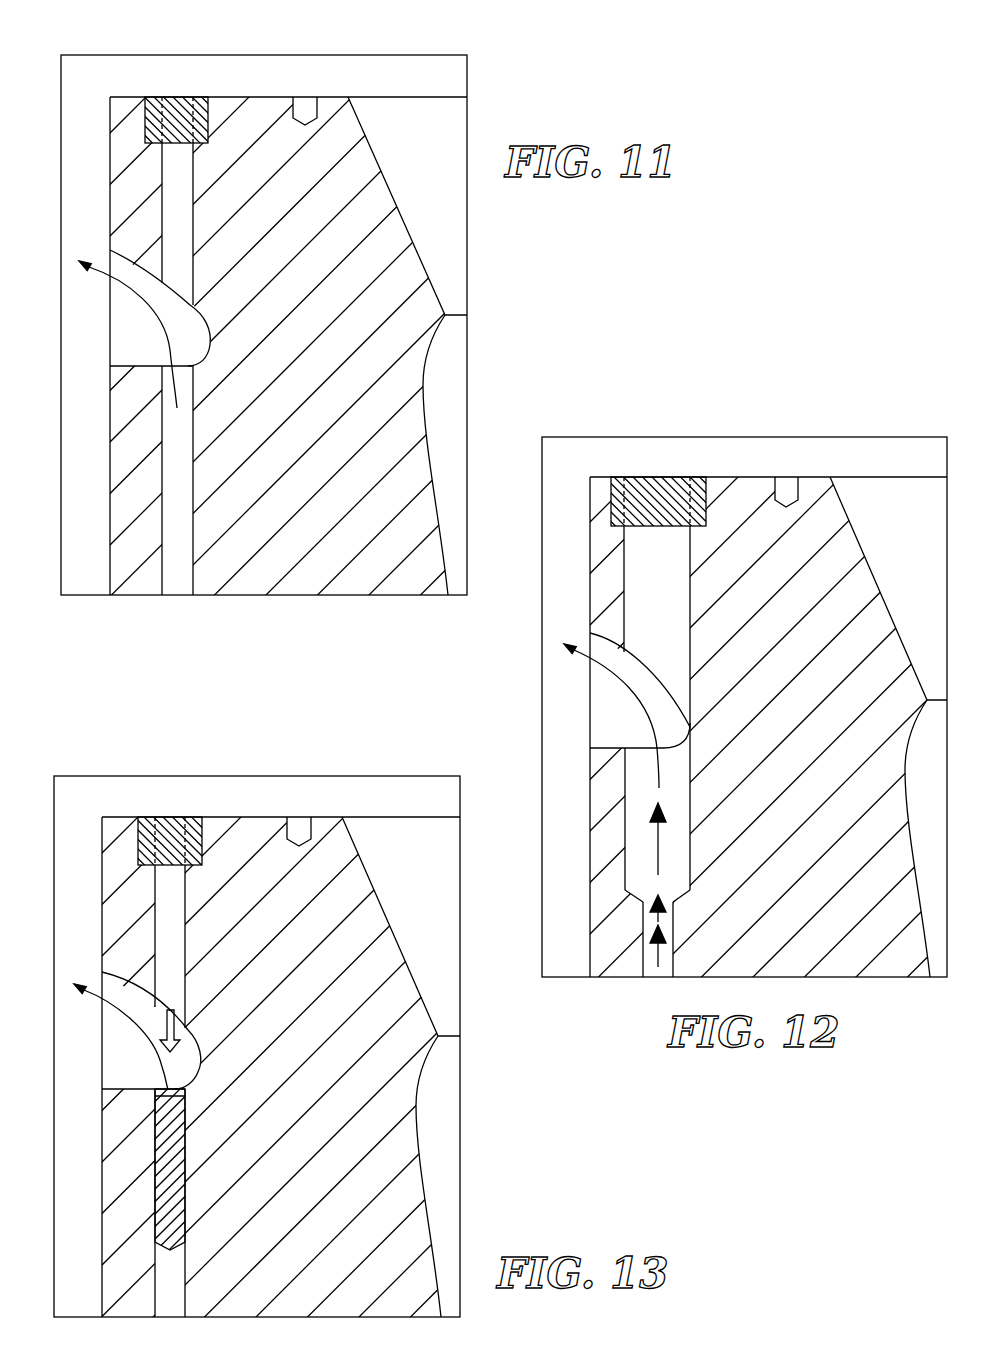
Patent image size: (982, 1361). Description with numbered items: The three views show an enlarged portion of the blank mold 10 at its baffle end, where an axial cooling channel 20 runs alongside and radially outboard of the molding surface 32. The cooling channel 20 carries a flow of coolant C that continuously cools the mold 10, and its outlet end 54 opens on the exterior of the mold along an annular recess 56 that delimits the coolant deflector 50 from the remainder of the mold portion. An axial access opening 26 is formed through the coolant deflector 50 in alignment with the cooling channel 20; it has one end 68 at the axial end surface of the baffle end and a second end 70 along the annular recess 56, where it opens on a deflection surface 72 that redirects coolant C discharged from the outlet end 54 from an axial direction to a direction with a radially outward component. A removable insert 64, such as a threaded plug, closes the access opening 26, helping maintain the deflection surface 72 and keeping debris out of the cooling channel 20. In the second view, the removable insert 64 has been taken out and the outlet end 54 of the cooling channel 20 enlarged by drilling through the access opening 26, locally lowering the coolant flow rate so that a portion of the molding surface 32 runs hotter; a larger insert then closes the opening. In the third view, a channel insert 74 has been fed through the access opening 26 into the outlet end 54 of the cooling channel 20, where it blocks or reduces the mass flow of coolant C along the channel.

In FIG. 11, the blank mold 10 is at (118, 32).
In FIG. 12, the blank mold 10 is at (595, 425).
In FIG. 13, the blank mold 10 is at (108, 762).
In FIG. 11, the axial cooling channel 20 is at (180, 512).
In FIG. 12, the axial cooling channel 20 is at (678, 872).
In FIG. 13, the axial cooling channel 20 is at (178, 1265).
In FIG. 11, the axial access opening 26 is at (187, 185).
In FIG. 12, the axial access opening 26 is at (657, 708).
In FIG. 13, the axial access opening 26 is at (175, 903).
In FIG. 12, the molding surface 32 is at (908, 815).
In FIG. 11, the coolant deflector 50 is at (117, 190).
In FIG. 12, the coolant deflector 50 is at (597, 575).
In FIG. 13, the coolant deflector 50 is at (110, 910).
In FIG. 11, the outlet end 54 is at (183, 370).
In FIG. 12, the outlet end 54 is at (665, 750).
In FIG. 13, the outlet end 54 is at (178, 1085).
In FIG. 11, the annular recess 56 is at (125, 336).
In FIG. 12, the annular recess 56 is at (613, 716).
In FIG. 13, the annular recess 56 is at (122, 1057).
In FIG. 11, the removable insert 64 is at (198, 126).
In FIG. 12, the removable insert 64 is at (657, 501).
In FIG. 13, the removable insert 64 is at (195, 850).
In FIG. 11, the end of access opening 68 is at (180, 97).
In FIG. 11, the second end of access opening 70 is at (183, 305).
In FIG. 11, the deflection surface 72 is at (140, 267).
In FIG. 12, the deflection surface 72 is at (640, 680).
In FIG. 13, the deflection surface 72 is at (128, 988).
In FIG. 13, the channel insert 74 is at (177, 1115).
In FIG. 11, the coolant C is at (174, 480).
In FIG. 12, the coolant C is at (658, 957).